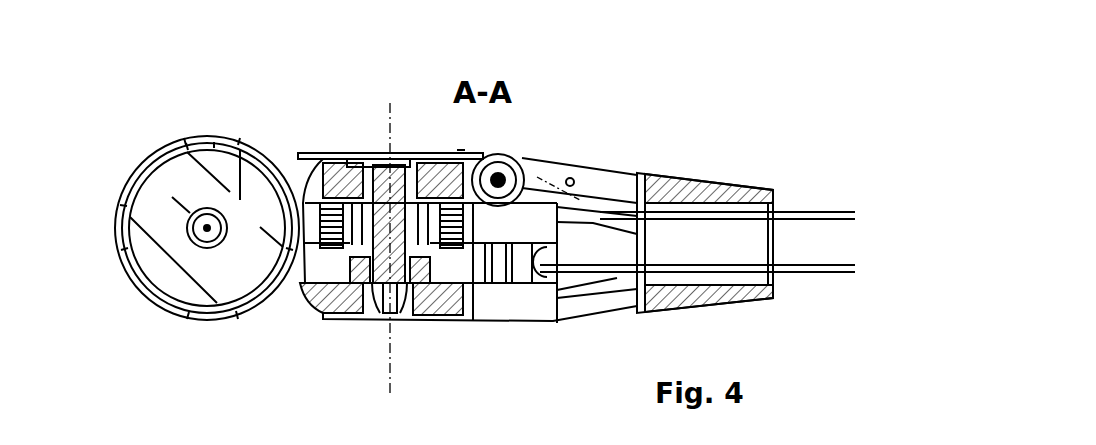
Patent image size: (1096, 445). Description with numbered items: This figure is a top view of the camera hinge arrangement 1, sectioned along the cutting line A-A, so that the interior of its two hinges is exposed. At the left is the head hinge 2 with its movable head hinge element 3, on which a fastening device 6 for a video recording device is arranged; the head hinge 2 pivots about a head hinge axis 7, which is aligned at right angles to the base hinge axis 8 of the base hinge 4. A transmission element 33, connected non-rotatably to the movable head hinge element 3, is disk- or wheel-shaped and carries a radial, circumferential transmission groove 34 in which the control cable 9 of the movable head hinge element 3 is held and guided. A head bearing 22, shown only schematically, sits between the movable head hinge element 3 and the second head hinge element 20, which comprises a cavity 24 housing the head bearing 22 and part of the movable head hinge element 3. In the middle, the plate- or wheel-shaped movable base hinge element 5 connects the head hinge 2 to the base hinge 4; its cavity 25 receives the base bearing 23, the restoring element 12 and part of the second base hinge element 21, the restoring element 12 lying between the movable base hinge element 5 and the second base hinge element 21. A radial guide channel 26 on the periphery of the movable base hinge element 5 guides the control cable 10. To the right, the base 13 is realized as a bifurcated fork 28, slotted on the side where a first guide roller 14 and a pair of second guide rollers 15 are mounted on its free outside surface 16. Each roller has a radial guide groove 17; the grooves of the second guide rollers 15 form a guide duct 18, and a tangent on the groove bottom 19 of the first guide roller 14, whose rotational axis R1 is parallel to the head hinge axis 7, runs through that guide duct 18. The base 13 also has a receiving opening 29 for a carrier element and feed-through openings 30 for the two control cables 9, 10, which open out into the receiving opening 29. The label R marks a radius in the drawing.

The camera hinge arrangement 1 is at (735, 112).
The head hinge 2 is at (130, 176).
The movable head hinge element 3 is at (212, 225).
The base hinge 4 is at (334, 313).
The movable base hinge element 5 is at (341, 160).
The fastening device 6 is at (190, 243).
The head hinge axis 7 is at (240, 200).
The base hinge axis 8 is at (394, 120).
The control cable 9 is at (833, 212).
The control cable 10 is at (835, 272).
The restoring element 12 is at (447, 282).
The base 13 is at (660, 180).
The first guide roller 14 is at (523, 150).
The pair of second guide rollers 15 is at (440, 147).
The free outside surface 16 is at (640, 133).
The radial guide groove 17 is at (459, 150).
The guide duct 18 is at (472, 143).
The groove bottom 19 is at (498, 157).
The second head hinge element 20 is at (152, 300).
The second base hinge element 21 is at (377, 283).
The head bearing 22 is at (190, 314).
The base bearing 23 is at (378, 160).
The cavity 24 is at (236, 314).
The cavity 25 is at (400, 268).
The radial guide channel 26 is at (547, 258).
The fork 28 is at (583, 322).
The receiving opening 29 is at (752, 233).
The feed-through openings 30 is at (620, 214).
The transmission element 33 is at (187, 150).
The transmission groove 34 is at (214, 148).
The radius R is at (422, 148).
The rotational axis R1 is at (500, 200).